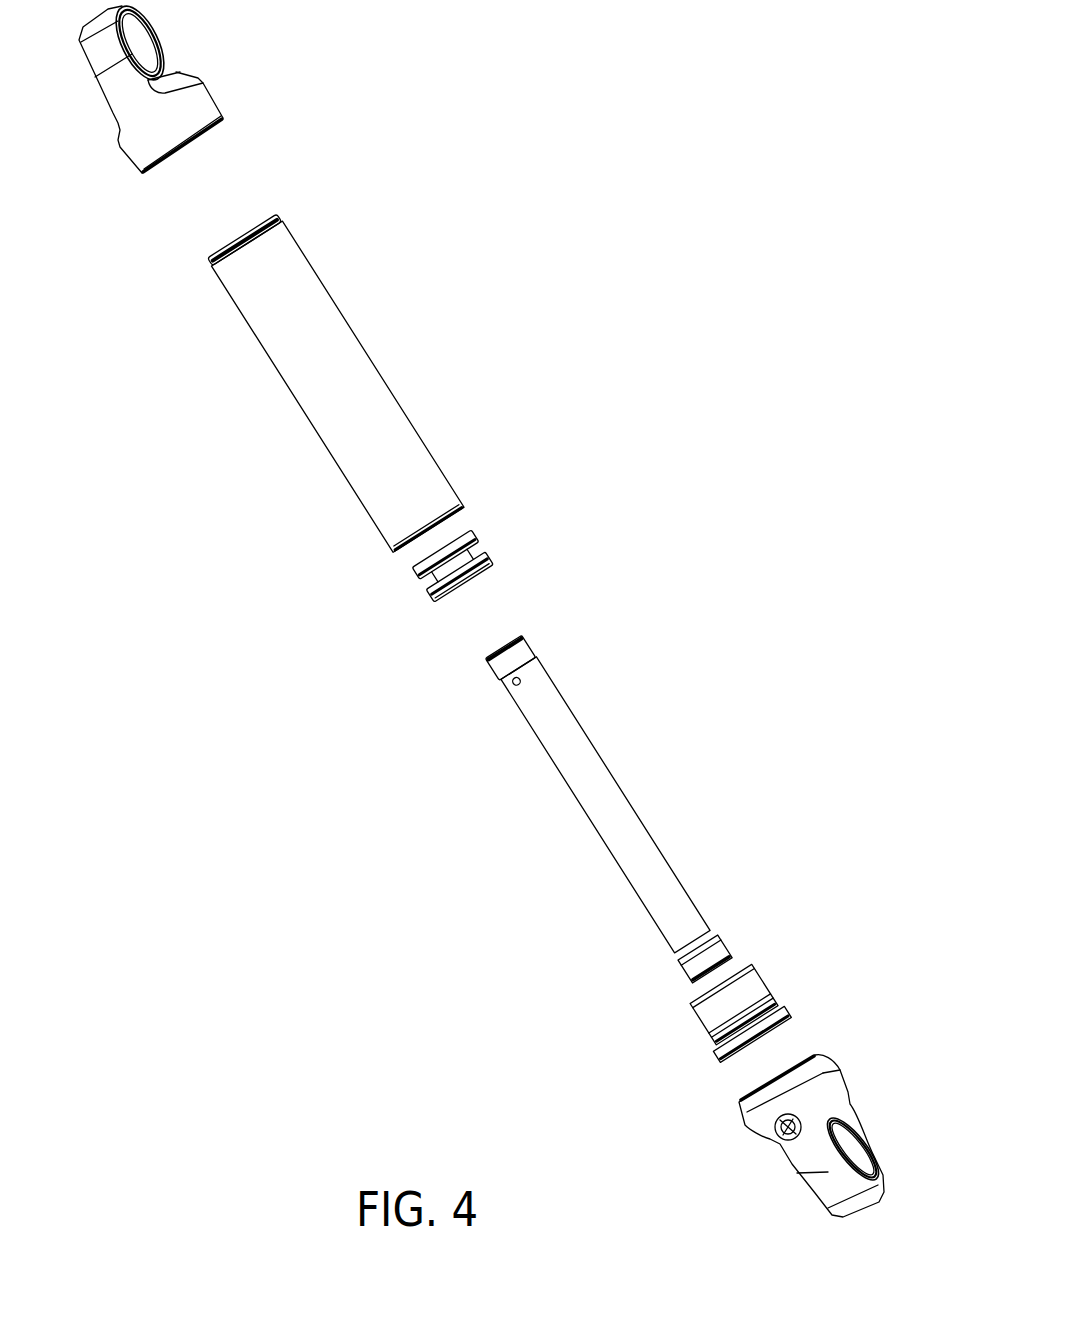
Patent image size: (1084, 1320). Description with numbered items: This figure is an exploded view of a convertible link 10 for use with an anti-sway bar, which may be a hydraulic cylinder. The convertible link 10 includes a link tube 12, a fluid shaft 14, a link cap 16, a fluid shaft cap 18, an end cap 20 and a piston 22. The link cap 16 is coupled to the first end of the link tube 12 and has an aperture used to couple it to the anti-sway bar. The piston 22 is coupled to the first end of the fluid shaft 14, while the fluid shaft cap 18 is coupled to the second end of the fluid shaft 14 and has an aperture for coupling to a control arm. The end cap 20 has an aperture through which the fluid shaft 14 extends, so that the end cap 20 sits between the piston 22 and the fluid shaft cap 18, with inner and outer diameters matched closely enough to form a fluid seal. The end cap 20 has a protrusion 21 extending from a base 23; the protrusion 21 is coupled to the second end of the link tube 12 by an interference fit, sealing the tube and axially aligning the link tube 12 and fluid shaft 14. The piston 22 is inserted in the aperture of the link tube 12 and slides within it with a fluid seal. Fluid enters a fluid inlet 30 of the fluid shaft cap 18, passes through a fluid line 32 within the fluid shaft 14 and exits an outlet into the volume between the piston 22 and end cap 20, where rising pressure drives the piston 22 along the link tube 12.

The convertible link 10 is at (642, 236).
The link tube 12 is at (308, 362).
The fluid shaft 14 is at (613, 843).
The link cap 16 is at (173, 116).
The fluid shaft cap 18 is at (823, 1073).
The end cap 20 is at (719, 976).
The protrusion 21 is at (707, 1010).
The piston 22 is at (470, 537).
The base 23 is at (716, 1059).
The fluid inlet 30 is at (766, 1139).
The fluid line 32 is at (518, 683).